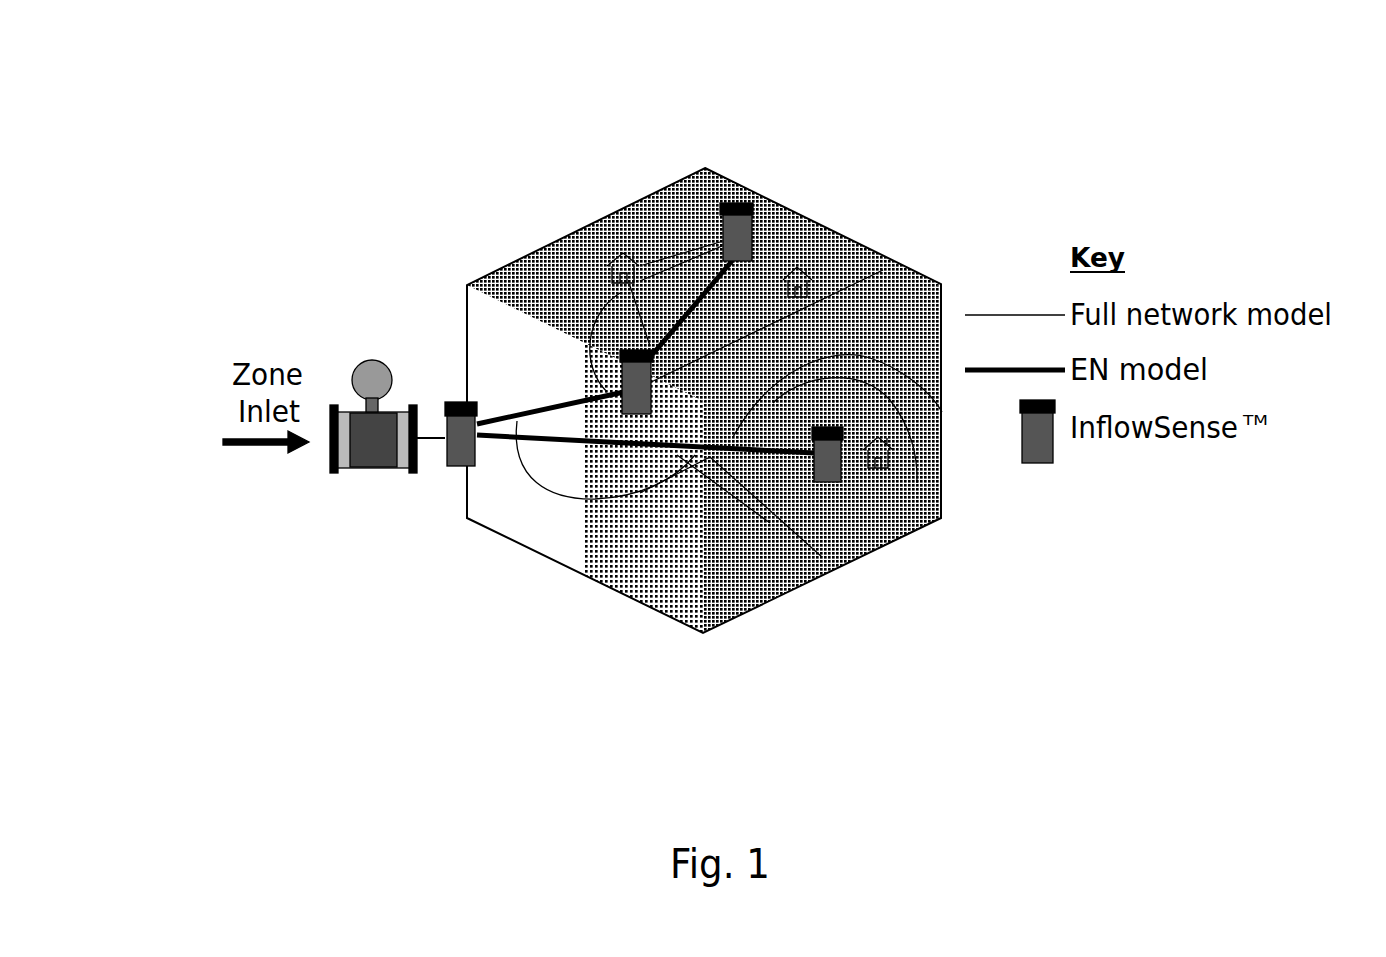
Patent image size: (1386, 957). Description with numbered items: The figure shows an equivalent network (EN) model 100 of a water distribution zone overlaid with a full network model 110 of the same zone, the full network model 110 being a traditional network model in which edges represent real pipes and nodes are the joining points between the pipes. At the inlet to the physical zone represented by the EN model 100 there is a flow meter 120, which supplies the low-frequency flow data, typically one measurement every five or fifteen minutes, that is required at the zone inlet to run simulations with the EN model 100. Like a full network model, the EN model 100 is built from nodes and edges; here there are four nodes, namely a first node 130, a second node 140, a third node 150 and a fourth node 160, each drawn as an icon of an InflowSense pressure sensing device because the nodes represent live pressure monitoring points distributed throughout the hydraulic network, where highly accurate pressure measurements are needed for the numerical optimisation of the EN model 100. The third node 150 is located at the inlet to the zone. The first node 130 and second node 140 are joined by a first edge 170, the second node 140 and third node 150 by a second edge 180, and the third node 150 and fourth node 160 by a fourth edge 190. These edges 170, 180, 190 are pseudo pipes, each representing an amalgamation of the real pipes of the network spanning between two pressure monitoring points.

The EN model 100 is at (590, 451).
The full network model 110 is at (680, 168).
The flow meter 120 is at (372, 358).
The first node 130 is at (737, 203).
The second node 140 is at (620, 350).
The third node 150 is at (449, 466).
The fourth node 160 is at (828, 485).
The first edge 170 is at (705, 280).
The second edge 180 is at (530, 410).
The fourth edge 190 is at (677, 453).